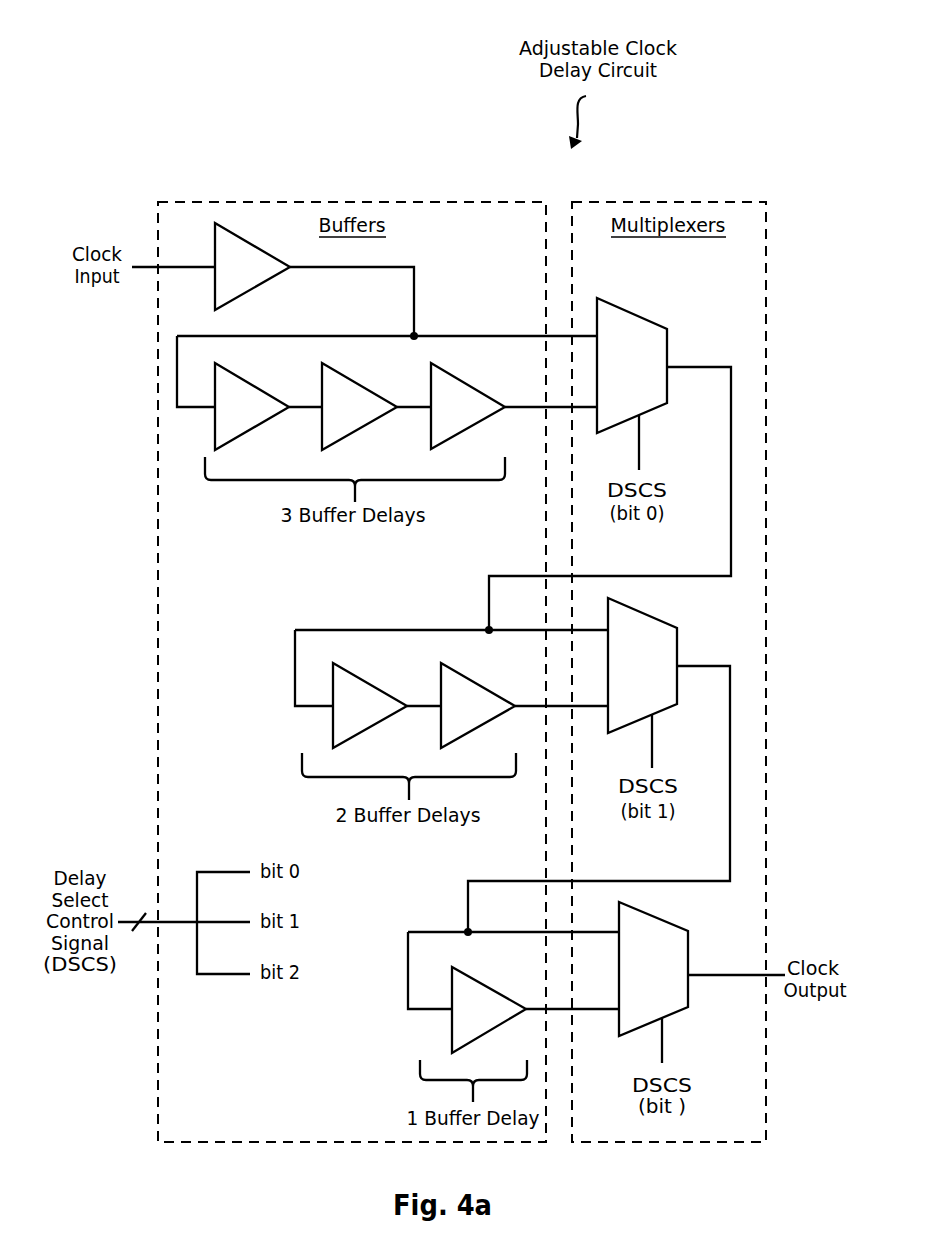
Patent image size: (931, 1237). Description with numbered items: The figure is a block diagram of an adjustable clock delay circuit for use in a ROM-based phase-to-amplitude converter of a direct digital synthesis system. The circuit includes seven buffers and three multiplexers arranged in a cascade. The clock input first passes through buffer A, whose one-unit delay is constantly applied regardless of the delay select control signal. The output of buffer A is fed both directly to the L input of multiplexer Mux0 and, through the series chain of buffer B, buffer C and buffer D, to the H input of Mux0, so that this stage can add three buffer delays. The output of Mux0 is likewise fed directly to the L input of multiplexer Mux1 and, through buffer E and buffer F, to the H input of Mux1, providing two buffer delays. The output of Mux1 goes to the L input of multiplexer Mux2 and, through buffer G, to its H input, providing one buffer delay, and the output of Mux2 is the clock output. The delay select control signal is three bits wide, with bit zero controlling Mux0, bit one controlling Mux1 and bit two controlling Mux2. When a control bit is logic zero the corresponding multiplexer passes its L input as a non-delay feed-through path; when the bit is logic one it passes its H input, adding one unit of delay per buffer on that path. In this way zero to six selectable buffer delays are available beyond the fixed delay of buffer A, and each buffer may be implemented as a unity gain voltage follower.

The buffer A is at (252, 266).
The buffer B is at (252, 406).
The buffer C is at (359, 406).
The buffer D is at (468, 406).
The buffer E is at (370, 705).
The buffer F is at (478, 705).
The buffer G is at (489, 1010).
The multiplexer Mux0 is at (632, 384).
The multiplexer Mux1 is at (642, 683).
The multiplexer Mux2 is at (653, 982).